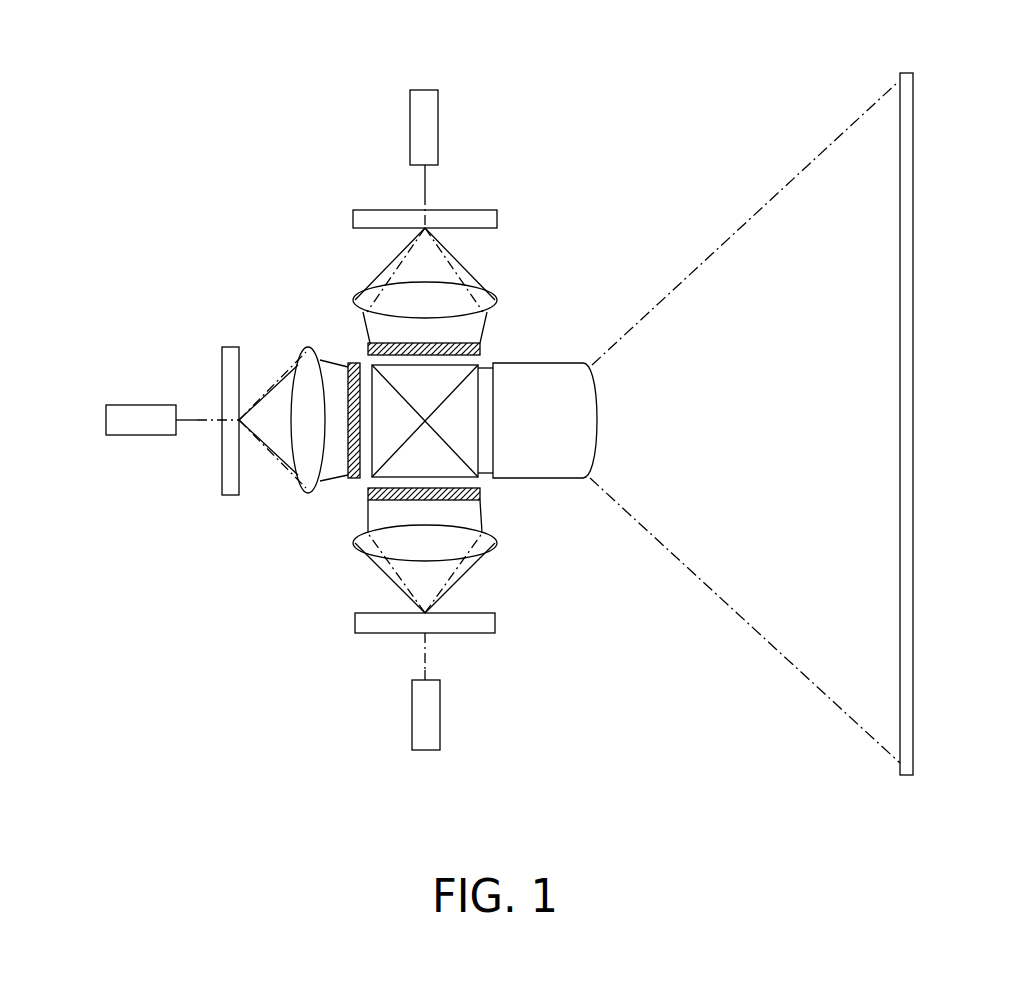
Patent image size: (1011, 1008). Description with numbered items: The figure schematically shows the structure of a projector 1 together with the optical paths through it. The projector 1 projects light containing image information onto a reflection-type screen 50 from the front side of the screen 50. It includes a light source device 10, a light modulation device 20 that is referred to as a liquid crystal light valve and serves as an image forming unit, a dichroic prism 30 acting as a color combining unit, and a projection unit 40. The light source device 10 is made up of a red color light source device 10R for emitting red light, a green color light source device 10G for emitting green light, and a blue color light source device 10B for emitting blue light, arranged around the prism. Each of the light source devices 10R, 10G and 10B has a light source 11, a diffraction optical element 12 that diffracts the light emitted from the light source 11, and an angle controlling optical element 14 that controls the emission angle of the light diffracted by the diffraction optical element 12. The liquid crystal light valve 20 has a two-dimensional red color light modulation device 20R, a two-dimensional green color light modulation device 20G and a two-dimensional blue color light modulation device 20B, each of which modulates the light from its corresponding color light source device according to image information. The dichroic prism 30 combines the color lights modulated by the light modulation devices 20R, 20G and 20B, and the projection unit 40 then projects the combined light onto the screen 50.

The projector 1 is at (180, 237).
The light source device 10 is at (363, 427).
The red color light source device 10R is at (518, 176).
The green color light source device 10G is at (190, 521).
The blue color light source device 10B is at (534, 603).
The light source 11 is at (425, 95).
The diffraction optical element 12 is at (497, 217).
The angle controlling optical element 14 is at (497, 297).
The light modulation device 20 is at (435, 442).
The red color light modulation device 20R is at (366, 344).
The green color light modulation device 20G is at (350, 480).
The blue color light modulation device 20B is at (480, 497).
The dichroic prism 30 is at (474, 392).
The projection unit 40 is at (562, 375).
The screen 50 is at (908, 183).